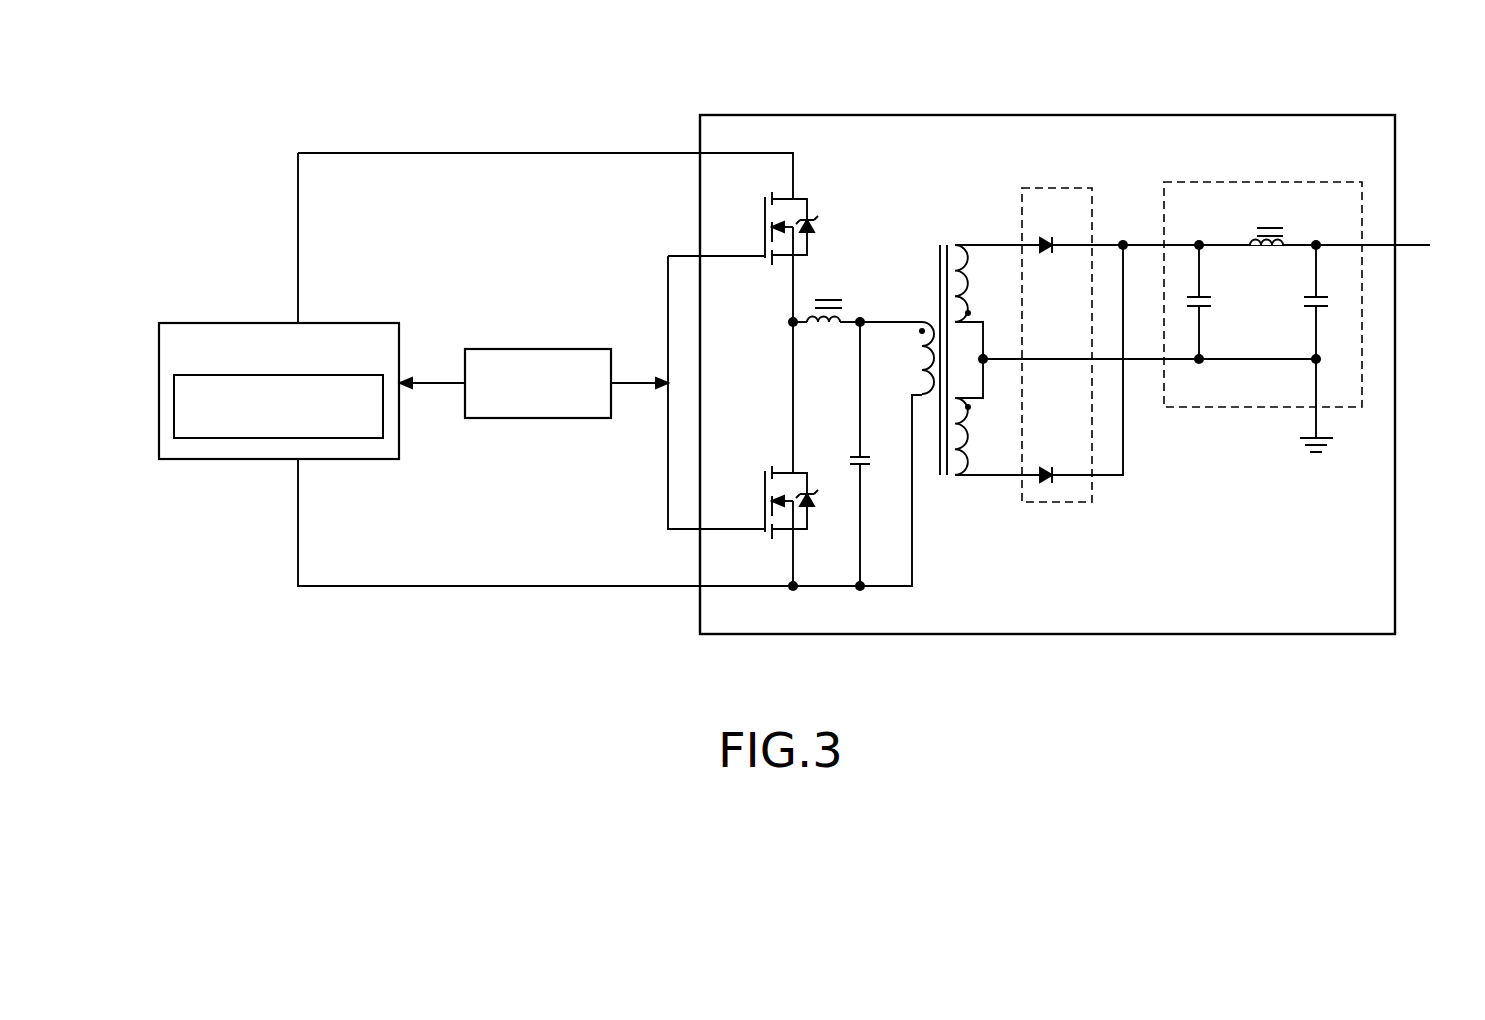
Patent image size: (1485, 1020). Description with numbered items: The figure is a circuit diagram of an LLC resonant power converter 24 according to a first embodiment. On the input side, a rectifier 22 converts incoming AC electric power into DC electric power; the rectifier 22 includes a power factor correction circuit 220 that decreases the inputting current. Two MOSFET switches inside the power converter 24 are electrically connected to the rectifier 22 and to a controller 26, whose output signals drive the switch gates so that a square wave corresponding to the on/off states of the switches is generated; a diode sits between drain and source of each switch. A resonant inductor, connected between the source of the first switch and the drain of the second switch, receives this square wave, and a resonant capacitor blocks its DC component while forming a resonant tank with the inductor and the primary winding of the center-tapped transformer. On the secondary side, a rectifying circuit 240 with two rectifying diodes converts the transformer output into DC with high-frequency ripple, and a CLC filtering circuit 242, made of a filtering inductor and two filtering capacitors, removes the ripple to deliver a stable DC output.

The rectifier 22 is at (197, 341).
The power factor correction circuit 220 is at (220, 428).
The power converter 24 is at (870, 143).
The controller 26 is at (537, 360).
The rectifying circuit 240 is at (1035, 195).
The filtering circuit 242 is at (1207, 197).